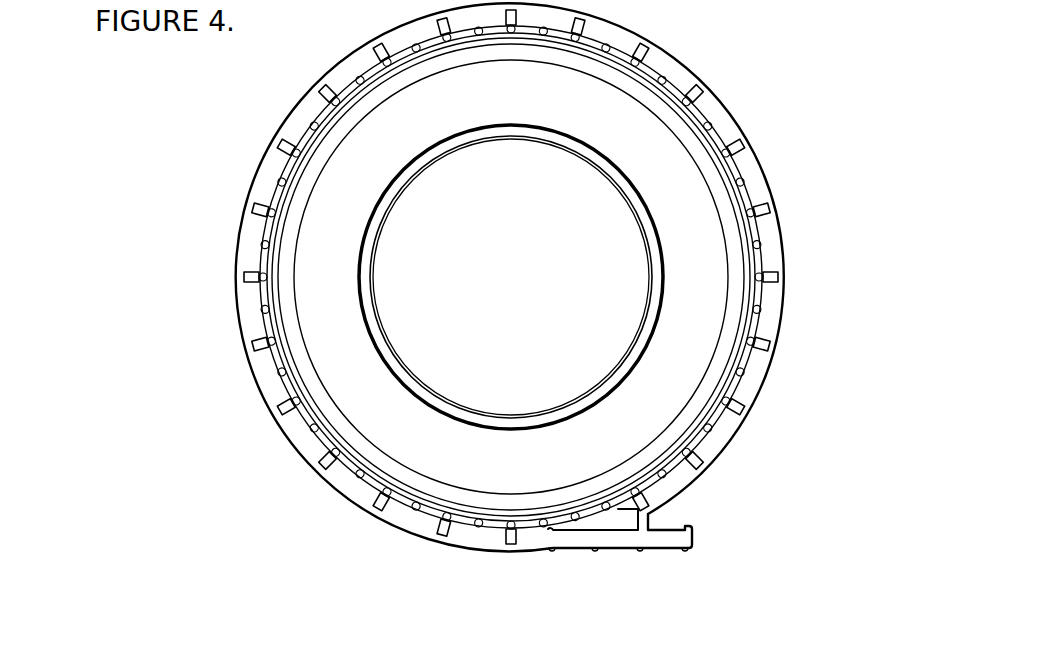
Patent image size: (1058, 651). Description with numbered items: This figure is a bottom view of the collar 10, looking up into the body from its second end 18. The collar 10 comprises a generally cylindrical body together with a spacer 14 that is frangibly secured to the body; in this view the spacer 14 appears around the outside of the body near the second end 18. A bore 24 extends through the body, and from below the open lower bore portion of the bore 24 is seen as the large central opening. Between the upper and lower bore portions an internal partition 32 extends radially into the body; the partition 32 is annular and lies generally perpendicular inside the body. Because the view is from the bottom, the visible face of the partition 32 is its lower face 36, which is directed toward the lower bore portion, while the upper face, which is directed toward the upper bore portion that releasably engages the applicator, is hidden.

The collar 10 is at (491, 277).
The spacer 14 is at (233, 320).
The second end 18 is at (713, 373).
The bore 24 is at (462, 327).
The internal partition 32 is at (703, 322).
The lower face 36 is at (683, 228).